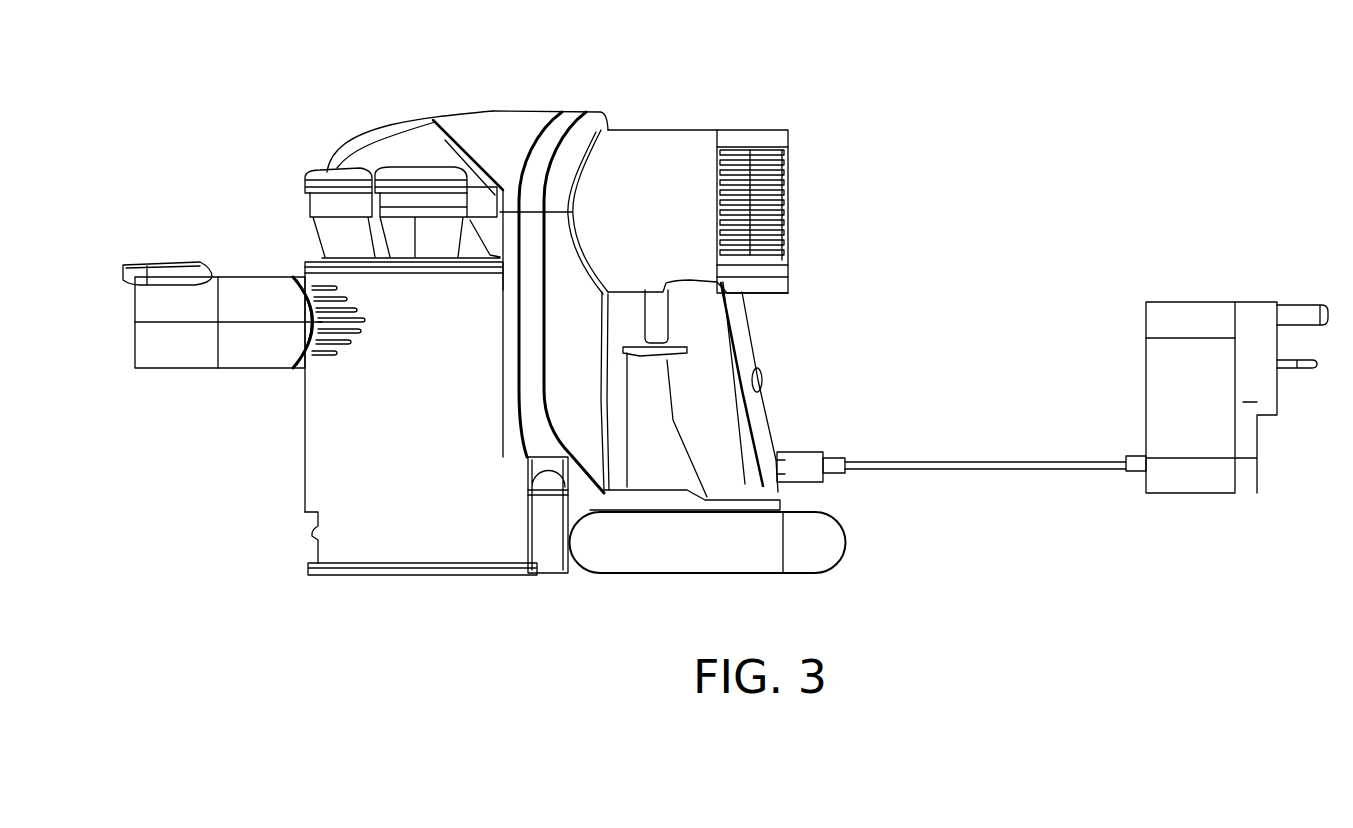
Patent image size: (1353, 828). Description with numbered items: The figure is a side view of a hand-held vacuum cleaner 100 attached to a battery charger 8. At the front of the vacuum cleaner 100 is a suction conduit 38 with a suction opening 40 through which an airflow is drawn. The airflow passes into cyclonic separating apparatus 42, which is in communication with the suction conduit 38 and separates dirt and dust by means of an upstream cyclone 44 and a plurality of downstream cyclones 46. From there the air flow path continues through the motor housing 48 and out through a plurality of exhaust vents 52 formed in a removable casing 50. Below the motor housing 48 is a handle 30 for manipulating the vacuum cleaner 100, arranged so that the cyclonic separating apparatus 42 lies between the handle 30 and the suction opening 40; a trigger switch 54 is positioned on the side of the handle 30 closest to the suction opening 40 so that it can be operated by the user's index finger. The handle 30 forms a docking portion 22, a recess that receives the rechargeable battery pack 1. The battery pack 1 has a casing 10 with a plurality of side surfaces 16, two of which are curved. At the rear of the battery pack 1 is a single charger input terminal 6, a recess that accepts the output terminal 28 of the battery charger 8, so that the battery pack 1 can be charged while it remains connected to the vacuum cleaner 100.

The rechargeable battery pack 1 is at (617, 555).
The charger input terminal 6 is at (773, 470).
The battery charger 8 is at (1196, 302).
The casing 10 is at (675, 552).
The side surfaces 16 is at (810, 550).
The docking portion 22 is at (730, 452).
The output terminal 28 is at (773, 460).
The handle 30 is at (735, 347).
The suction conduit 38 is at (253, 353).
The suction opening 40 is at (132, 340).
The cyclonic separating apparatus 42 is at (303, 538).
The upstream cyclone 44 is at (383, 547).
The downstream cyclones 46 is at (315, 215).
The motor housing 48 is at (660, 135).
The removable casing 50 is at (773, 137).
The exhaust vents 52 is at (790, 217).
The trigger switch 54 is at (657, 313).
The handheld vacuum cleaner 100 is at (525, 128).